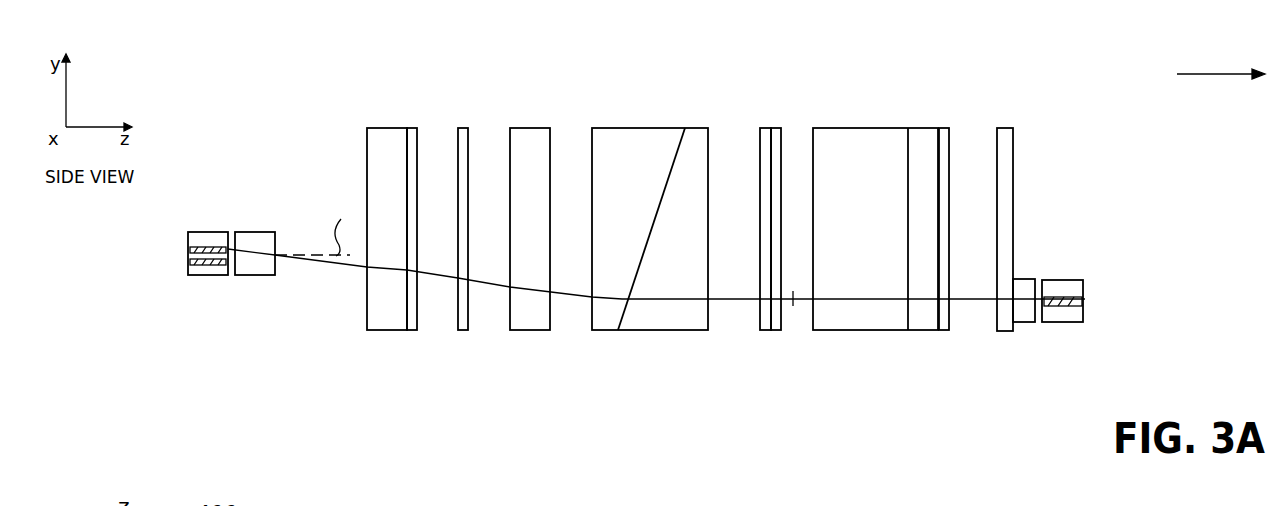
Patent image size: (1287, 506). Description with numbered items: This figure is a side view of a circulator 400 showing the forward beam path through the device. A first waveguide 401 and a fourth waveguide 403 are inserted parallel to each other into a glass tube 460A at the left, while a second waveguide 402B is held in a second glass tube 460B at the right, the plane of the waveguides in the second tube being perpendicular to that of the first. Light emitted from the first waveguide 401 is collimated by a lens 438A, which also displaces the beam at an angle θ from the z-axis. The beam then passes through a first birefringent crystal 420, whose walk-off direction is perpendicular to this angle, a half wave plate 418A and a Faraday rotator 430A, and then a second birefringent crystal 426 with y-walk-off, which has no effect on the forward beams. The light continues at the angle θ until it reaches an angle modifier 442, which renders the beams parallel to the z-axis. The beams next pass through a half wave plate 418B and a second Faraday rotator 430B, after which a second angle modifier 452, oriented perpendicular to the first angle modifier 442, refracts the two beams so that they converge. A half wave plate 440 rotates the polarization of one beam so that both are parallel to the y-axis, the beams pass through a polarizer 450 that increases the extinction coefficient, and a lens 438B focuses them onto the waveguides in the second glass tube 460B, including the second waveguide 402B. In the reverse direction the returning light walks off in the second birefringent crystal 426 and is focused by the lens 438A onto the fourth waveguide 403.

The circulator 400 is at (313, 108).
The first waveguide 401 is at (188, 247).
The fourth waveguide 403 is at (188, 262).
The glass tube 460A is at (203, 275).
The lens 438A is at (258, 275).
The first birefringent crystal 420 is at (382, 330).
The half wave plate 418A is at (412, 330).
The Faraday rotator 430A is at (462, 330).
The second birefringent crystal 426 is at (530, 330).
The angle modifier 442 is at (663, 330).
The half wave plate 418B is at (767, 331).
The second Faraday rotator 430B is at (774, 128).
The second angle modifier 452 is at (865, 331).
The half wave plate 440 is at (943, 331).
The polarizer 450 is at (1003, 128).
The lens 438B is at (1024, 322).
The second glass tube 460B is at (1065, 280).
The second waveguide 402B is at (1085, 300).